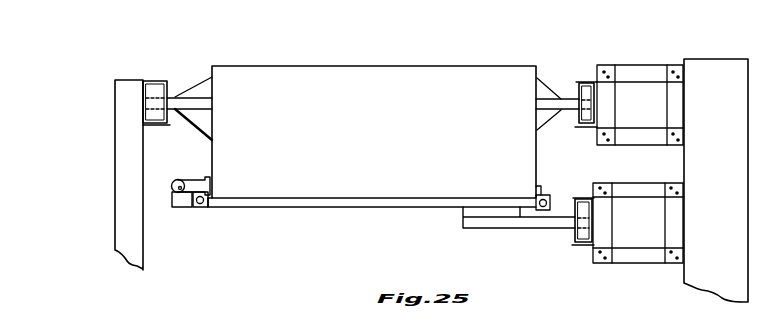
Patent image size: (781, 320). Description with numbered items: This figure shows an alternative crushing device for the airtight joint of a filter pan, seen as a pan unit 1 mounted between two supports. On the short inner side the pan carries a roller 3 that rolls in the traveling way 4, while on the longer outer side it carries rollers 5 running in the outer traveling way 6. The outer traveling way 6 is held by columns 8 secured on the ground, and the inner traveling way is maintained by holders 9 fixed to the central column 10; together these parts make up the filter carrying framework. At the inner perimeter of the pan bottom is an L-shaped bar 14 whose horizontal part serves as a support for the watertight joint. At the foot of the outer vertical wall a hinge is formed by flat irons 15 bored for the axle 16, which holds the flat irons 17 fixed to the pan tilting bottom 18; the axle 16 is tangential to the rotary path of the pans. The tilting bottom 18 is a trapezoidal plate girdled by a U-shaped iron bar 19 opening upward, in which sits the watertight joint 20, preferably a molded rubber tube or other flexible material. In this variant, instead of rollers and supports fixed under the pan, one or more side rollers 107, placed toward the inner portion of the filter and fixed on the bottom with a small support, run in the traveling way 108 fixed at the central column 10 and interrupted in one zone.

The housing / main body 1 is at (380, 153).
The roller 3 is at (587, 90).
The traveling way 4 is at (579, 83).
The rollers 5 is at (158, 93).
The outer traveling way 6 is at (150, 80).
The columns 8 is at (133, 196).
The holders 9 is at (647, 75).
The central column 10 is at (725, 65).
The L-shaped bar 14 is at (542, 187).
The flat irons 15 is at (195, 181).
The axle 16 is at (178, 181).
The flat irons 17 is at (178, 207).
The pan tilting bottom 18 is at (357, 208).
The U-shaped iron bar 19 is at (209, 204).
The watertight joint 20 is at (200, 207).
The side rollers 107 is at (577, 232).
The traveling way 108 is at (583, 247).